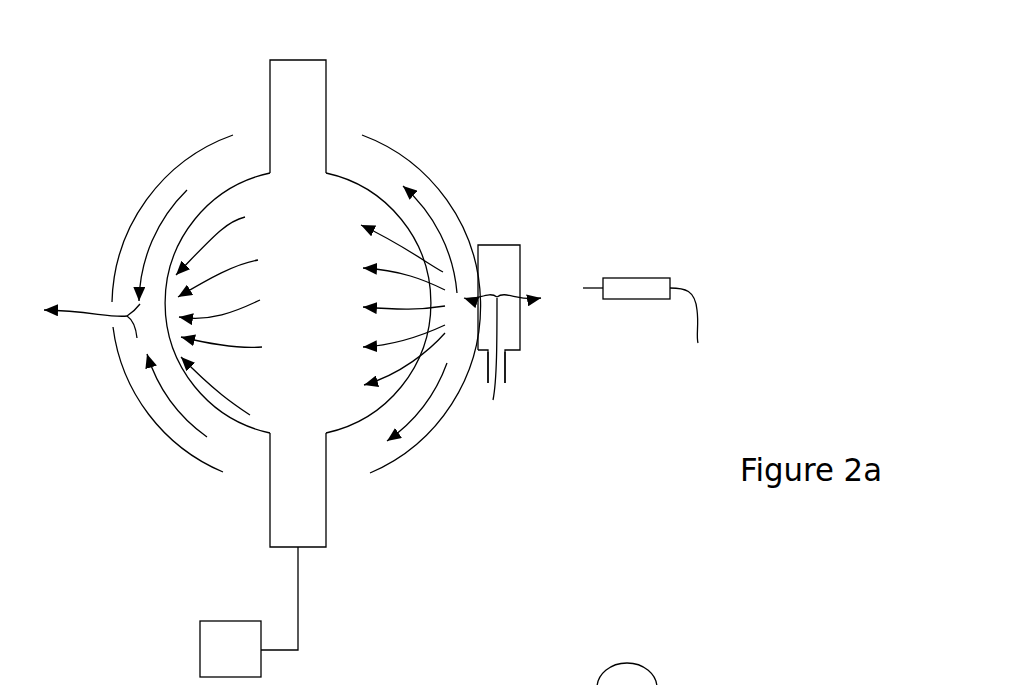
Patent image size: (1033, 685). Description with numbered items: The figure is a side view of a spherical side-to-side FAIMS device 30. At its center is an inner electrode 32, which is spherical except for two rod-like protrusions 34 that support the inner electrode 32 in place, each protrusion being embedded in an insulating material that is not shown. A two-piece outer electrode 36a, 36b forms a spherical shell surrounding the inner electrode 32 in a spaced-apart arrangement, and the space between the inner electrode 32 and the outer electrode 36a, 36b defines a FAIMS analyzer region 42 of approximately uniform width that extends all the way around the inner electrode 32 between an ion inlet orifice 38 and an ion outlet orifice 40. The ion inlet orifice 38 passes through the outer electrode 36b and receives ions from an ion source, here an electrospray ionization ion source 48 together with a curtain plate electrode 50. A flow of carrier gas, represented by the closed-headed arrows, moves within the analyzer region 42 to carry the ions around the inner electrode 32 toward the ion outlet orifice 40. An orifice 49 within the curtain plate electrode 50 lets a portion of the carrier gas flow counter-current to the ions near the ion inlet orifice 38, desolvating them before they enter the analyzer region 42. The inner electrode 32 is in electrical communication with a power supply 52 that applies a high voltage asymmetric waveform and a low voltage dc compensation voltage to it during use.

The spherical side-to-side FAIMS device 30 is at (806, 106).
The inner electrode 32 is at (257, 433).
The rod-like protrusions 34 is at (325, 76).
The outer electrode piece 36a is at (184, 158).
The outer electrode piece 36b is at (398, 153).
The ion inlet orifice 38 is at (487, 292).
The ion outlet orifice 40 is at (112, 308).
The FAIMS analyzer region 42 is at (403, 455).
The electrospray ionization ion source 48 is at (635, 278).
The orifice 49 is at (517, 291).
The curtain plate electrode 50 is at (522, 265).
The power supply 52 is at (200, 662).